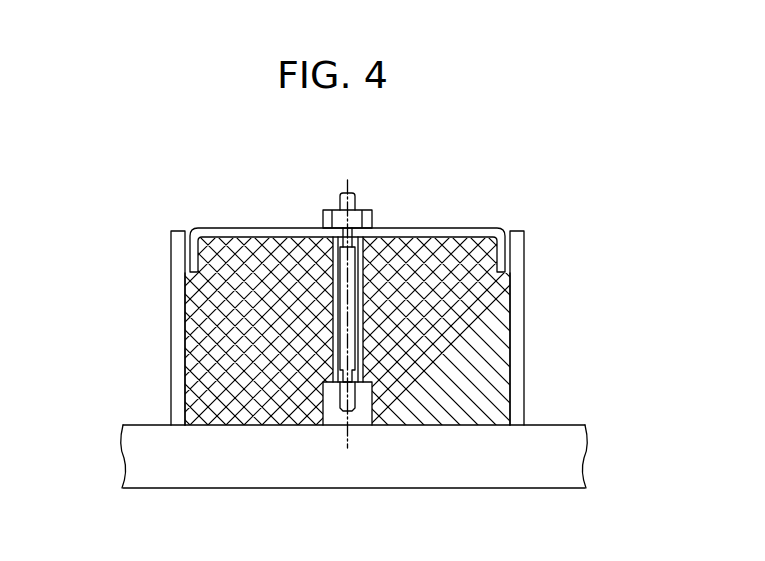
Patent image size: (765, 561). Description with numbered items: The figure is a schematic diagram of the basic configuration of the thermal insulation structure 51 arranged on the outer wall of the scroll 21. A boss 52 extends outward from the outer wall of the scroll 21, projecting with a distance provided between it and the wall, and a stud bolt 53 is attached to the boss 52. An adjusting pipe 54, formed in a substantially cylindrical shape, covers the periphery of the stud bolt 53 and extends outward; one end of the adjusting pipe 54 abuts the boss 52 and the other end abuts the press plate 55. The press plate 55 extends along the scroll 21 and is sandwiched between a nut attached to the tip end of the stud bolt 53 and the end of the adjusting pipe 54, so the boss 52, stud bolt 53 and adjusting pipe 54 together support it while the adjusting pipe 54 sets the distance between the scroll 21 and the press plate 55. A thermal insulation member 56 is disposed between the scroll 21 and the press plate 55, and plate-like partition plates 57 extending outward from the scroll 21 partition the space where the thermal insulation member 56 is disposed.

The thermal insulation structure 51 is at (178, 172).
The scroll 21 is at (457, 470).
The boss 52 is at (363, 422).
The stud bolt 53 is at (342, 363).
The adjusting pipe 54 is at (385, 246).
The press plate 55 is at (260, 231).
The thermal insulation member 56 is at (487, 358).
The partition plate 57 is at (171, 256).